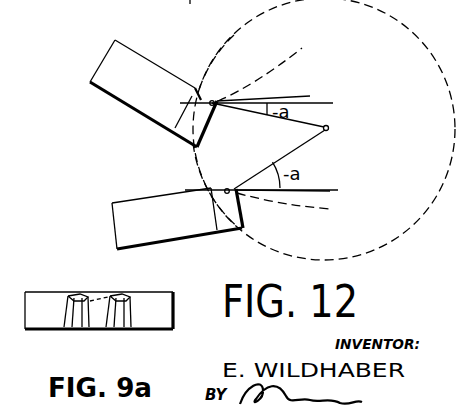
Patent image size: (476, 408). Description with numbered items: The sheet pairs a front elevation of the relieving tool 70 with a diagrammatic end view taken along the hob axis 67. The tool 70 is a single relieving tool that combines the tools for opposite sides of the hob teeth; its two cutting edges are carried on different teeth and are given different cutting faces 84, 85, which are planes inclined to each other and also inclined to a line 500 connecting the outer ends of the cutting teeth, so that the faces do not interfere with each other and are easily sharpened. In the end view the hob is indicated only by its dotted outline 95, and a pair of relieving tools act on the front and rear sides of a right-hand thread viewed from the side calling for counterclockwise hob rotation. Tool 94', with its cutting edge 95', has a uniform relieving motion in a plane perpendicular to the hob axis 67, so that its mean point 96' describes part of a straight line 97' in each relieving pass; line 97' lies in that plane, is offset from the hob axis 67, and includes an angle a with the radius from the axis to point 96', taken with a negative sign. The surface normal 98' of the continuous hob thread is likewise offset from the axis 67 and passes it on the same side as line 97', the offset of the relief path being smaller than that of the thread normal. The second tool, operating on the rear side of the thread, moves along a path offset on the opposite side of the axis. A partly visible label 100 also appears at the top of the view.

In FIG. 12, the circular path of tool tips 95 is at (324, 130).
In FIG. 12, the cutting edge 95' is at (218, 185).
In FIG. 12, the gear blank 100 is at (197, 4).
In FIG. 12, the relieving tool 94' is at (162, 218).
In FIG. 12, the hob axis 67 is at (328, 130).
In FIG. 12, the straight line 97' is at (283, 189).
In FIG. 12, the mean point 96' is at (283, 206).
In FIG. 12, the surface normal 98' is at (302, 207).
In FIG. 9a, the relieving tool 70 is at (130, 331).
In FIG. 9a, the cutting face 84 is at (78, 297).
In FIG. 9a, the cutting face 85 is at (120, 298).
In FIG. 9a, the line connecting outer ends of cutting teeth 500 is at (90, 298).